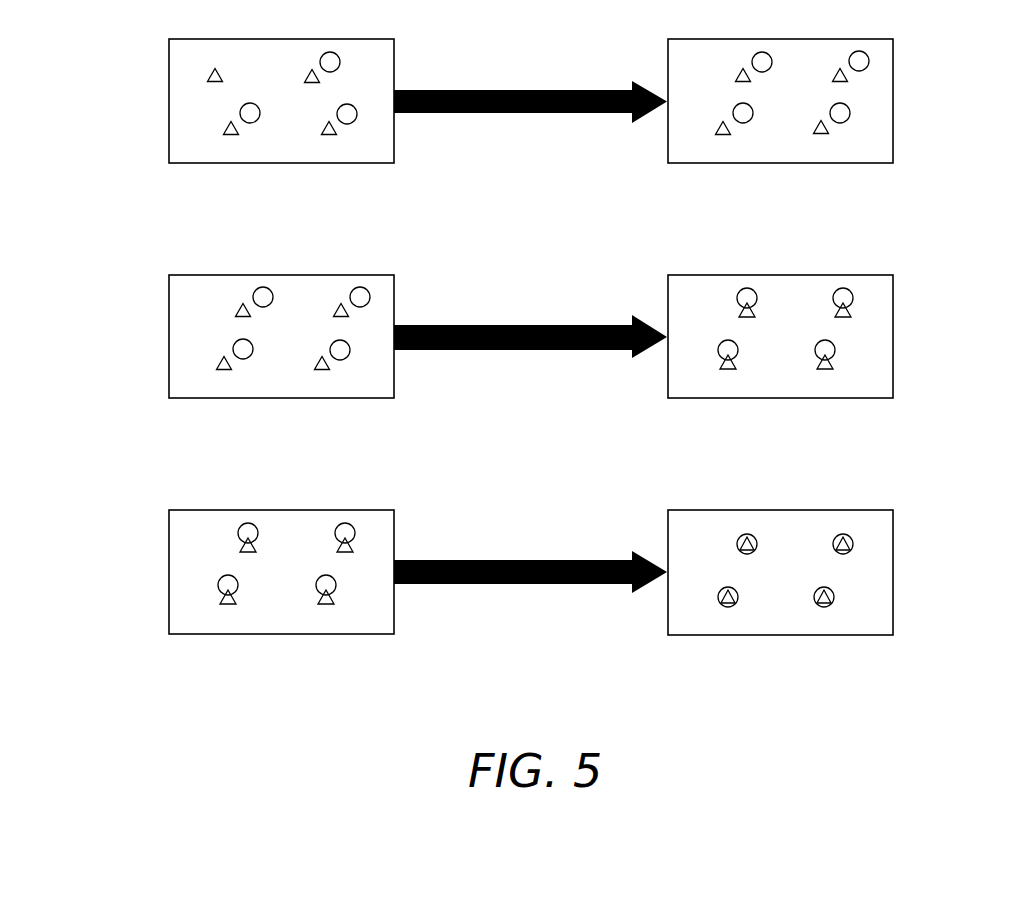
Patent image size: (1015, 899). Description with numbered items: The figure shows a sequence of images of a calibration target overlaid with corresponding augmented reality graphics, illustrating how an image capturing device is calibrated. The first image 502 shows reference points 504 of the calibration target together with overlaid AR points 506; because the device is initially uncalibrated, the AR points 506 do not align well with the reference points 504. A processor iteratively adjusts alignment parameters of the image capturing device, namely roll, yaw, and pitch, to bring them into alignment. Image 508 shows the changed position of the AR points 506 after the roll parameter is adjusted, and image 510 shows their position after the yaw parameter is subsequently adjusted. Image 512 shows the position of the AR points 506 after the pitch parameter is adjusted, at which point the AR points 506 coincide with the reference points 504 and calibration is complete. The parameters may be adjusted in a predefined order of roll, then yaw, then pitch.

The image 502 is at (282, 39).
The reference points 504 is at (210, 73).
The AR points 506 is at (247, 123).
The image 508 is at (893, 101).
The image 510 is at (893, 336).
The image 512 is at (893, 571).